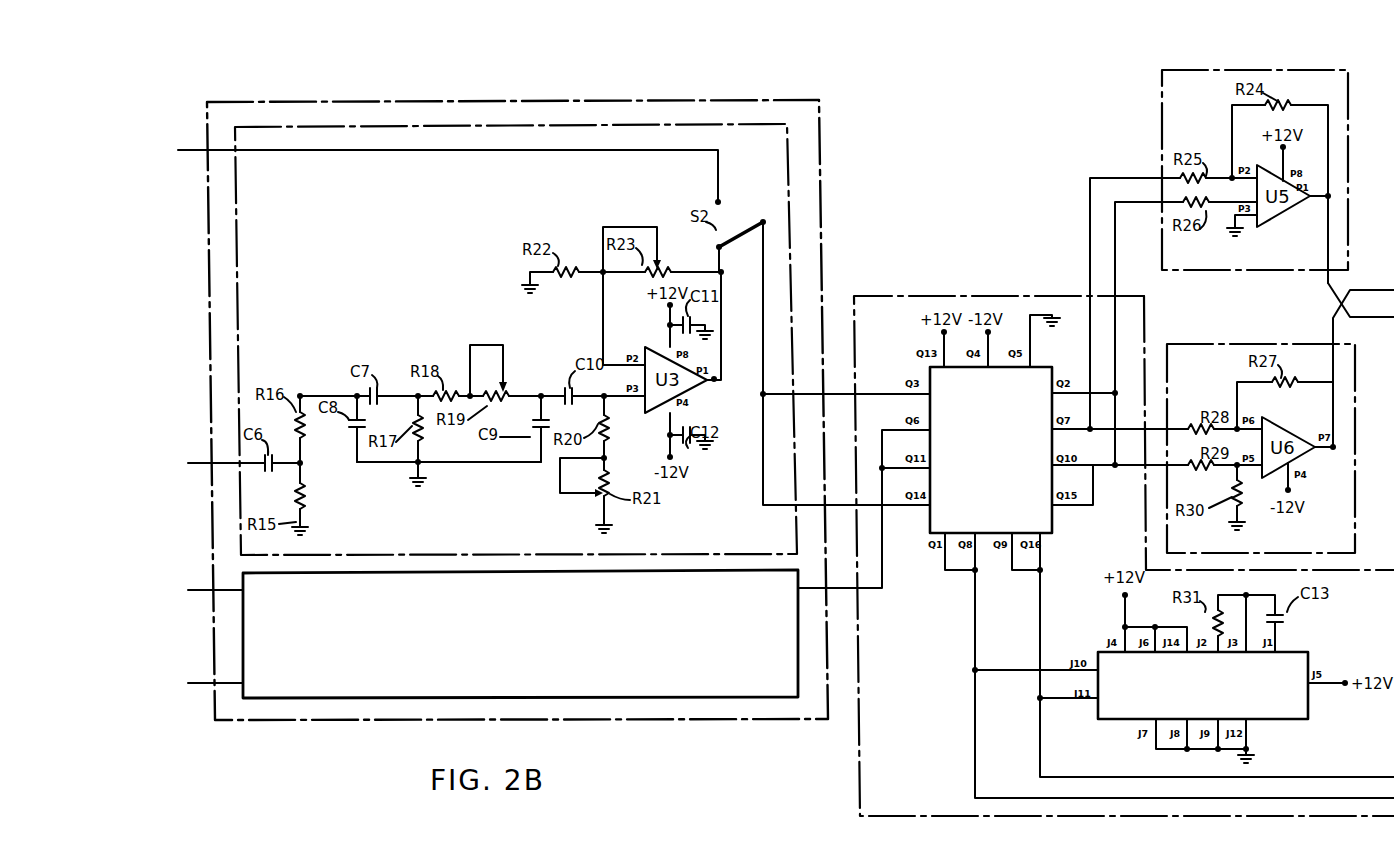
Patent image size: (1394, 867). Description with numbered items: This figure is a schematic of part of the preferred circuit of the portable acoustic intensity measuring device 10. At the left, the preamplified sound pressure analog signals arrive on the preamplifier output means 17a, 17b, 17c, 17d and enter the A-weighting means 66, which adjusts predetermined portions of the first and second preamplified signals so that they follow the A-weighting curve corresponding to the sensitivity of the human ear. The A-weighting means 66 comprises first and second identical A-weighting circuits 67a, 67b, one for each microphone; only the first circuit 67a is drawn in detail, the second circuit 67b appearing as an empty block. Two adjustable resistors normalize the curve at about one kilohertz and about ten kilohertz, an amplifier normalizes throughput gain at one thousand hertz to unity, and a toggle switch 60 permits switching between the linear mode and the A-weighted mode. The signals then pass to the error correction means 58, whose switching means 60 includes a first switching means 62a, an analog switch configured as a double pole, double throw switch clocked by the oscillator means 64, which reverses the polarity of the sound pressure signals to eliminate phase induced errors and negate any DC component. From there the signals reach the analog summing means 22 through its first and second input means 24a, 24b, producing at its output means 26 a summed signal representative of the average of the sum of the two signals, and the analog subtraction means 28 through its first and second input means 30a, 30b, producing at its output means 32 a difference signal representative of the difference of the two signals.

The portable acoustic intensity measuring device 10 is at (913, 84).
The preamplifier output means 17a is at (191, 150).
The preamplifier output means 17b is at (193, 462).
The preamplifier output means 17c is at (196, 590).
The preamplifier output means 17d is at (203, 683).
The analog summing means 22 is at (1161, 86).
The first input means of summing means 24a is at (1126, 178).
The second input means of summing means 24b is at (1116, 212).
The summing means output means 26 is at (1355, 319).
The analog subtraction means 28 is at (1213, 344).
The first input means of subtraction means 30a is at (1177, 428).
The second input means of subtraction means 30b is at (1176, 469).
The subtraction means output means 32 is at (1355, 290).
The error correction means 58 is at (918, 296).
The switching means 60 is at (754, 224).
The first switching means 62a is at (928, 528).
The oscillator means 64 is at (1290, 652).
The A-weighting means 66 is at (773, 100).
The first A-weighting circuit 67a is at (256, 127).
The second A-weighting circuit 67b is at (266, 578).